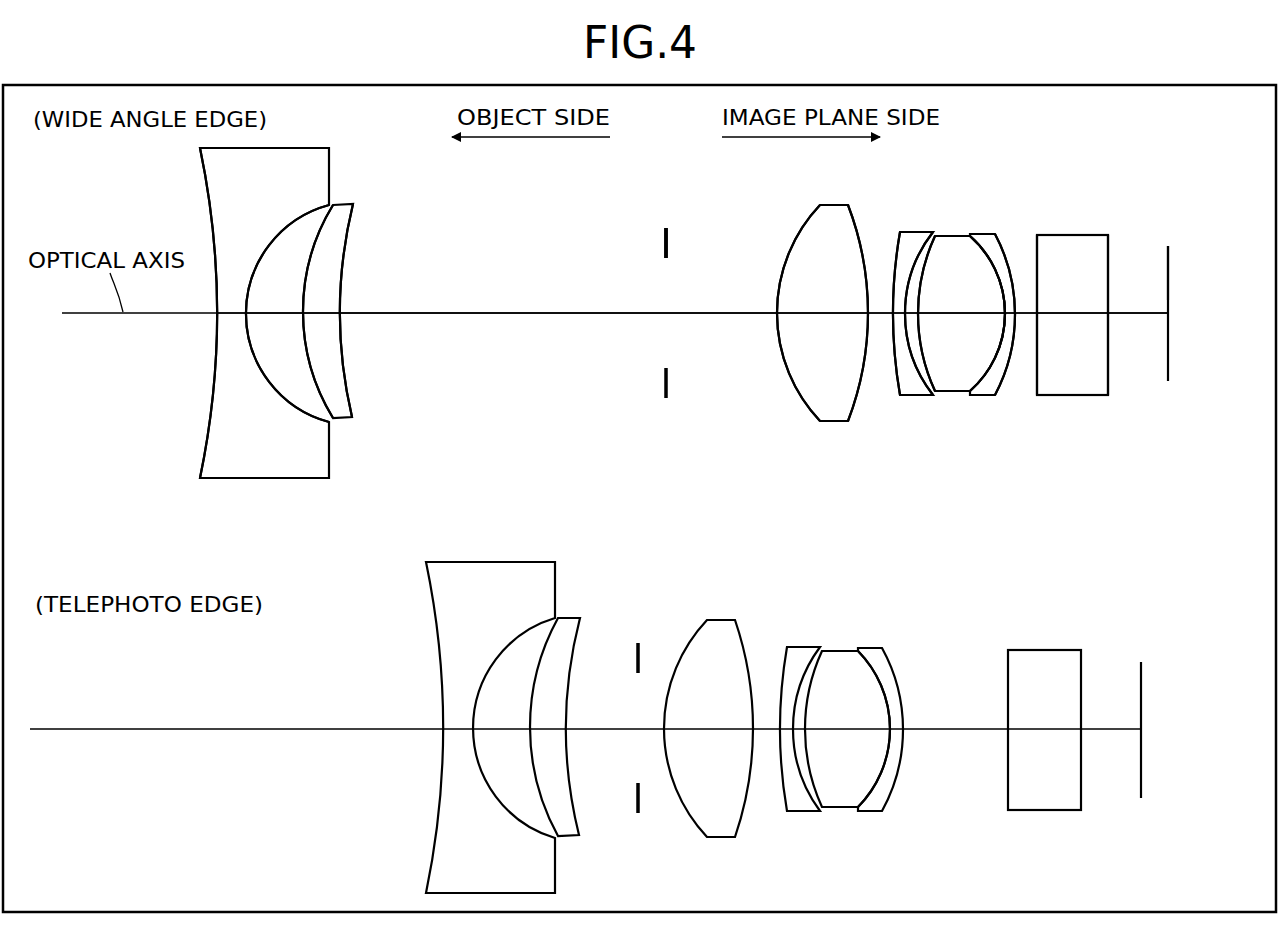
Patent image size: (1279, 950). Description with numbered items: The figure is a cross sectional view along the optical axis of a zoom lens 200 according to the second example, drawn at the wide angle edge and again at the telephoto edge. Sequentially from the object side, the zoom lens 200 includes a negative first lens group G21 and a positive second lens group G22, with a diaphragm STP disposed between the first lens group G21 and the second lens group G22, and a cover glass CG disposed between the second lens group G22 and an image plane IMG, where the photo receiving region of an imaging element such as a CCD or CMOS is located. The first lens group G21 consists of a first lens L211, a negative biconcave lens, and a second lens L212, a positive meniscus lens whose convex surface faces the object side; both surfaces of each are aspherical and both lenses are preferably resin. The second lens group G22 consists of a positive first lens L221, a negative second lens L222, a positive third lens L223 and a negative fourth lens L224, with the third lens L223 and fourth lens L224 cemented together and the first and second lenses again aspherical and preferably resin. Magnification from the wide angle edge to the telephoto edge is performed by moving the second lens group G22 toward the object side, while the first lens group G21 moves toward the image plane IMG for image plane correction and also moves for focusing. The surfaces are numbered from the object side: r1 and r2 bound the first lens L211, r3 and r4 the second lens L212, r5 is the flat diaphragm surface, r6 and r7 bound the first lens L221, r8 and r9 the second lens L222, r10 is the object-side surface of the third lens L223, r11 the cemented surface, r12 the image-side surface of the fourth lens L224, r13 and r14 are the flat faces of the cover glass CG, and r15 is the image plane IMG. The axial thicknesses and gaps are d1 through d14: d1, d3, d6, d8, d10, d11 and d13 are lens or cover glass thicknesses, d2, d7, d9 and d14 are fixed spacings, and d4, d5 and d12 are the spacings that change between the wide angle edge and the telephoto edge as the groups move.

The zoom lens 200 is at (1100, 131).
The first lens group G21 is at (405, 527).
The second lens group G22 is at (1042, 527).
The first lens L211 is at (263, 457).
The second lens L212 is at (342, 410).
The first lens L221 is at (835, 415).
The second lens L222 is at (913, 388).
The third lens L223 is at (948, 380).
The fourth lens L224 is at (988, 388).
The diaphragm STP is at (658, 242).
The cover glass CG is at (1080, 382).
The image plane IMG is at (1172, 272).
The radius of curvature r1 is at (210, 217).
The radius of curvature r2 is at (290, 232).
The radius of curvature r3 is at (322, 220).
The radius of curvature r4 is at (347, 247).
The radius of curvature r5 is at (670, 237).
The radius of curvature r6 is at (808, 222).
The radius of curvature r7 is at (851, 215).
The radius of curvature r8 is at (897, 255).
The radius of curvature r9 is at (922, 250).
The radius of curvature r10 is at (927, 258).
The radius of curvature r11 is at (987, 245).
The radius of curvature r12 is at (1008, 250).
The radius of curvature r13 is at (1038, 258).
The radius of curvature r14 is at (1110, 247).
The radius of curvature r15 is at (1168, 253).
The thickness d1 is at (233, 313).
The distance d2 is at (275, 313).
The thickness d3 is at (320, 313).
The distance d4 is at (488, 313).
The distance d5 is at (712, 313).
The thickness d6 is at (818, 315).
The distance d7 is at (883, 315).
The thickness d8 is at (898, 316).
The distance d9 is at (910, 316).
The thickness d10 is at (952, 314).
The thickness d11 is at (1023, 317).
The distance d12 is at (1037, 320).
The thickness d13 is at (1073, 317).
The distance d14 is at (1137, 317).